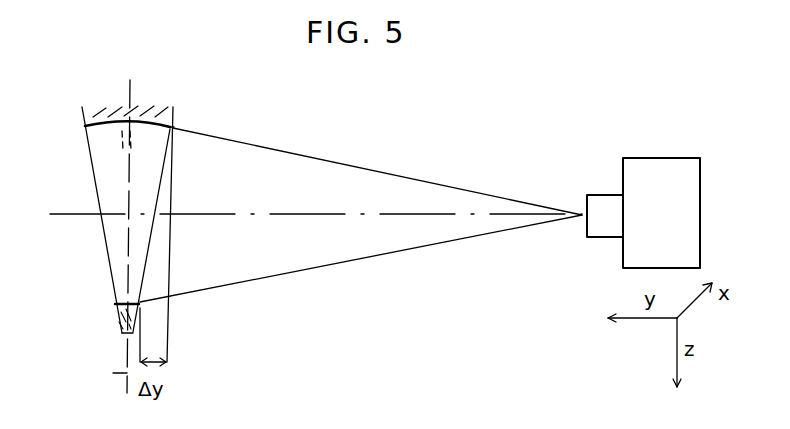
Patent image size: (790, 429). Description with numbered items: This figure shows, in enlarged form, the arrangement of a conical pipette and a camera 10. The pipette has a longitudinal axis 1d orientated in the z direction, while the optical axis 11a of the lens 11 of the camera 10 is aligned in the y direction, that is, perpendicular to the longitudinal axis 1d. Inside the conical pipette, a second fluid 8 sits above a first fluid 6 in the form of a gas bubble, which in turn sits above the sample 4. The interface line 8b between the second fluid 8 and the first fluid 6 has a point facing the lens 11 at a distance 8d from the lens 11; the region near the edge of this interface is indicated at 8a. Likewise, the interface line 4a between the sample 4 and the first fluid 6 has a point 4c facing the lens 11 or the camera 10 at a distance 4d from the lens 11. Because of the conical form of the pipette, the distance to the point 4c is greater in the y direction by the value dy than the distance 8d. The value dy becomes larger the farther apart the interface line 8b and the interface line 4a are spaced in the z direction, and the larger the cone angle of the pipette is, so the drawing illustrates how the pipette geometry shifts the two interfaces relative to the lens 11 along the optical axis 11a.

The second fluid 8 is at (85, 126).
The mirror edge 8a is at (175, 126).
The interface line 8b is at (117, 151).
The distance 8d is at (365, 168).
The first fluid 6 is at (97, 189).
The sample 4 is at (120, 324).
The interface line 4a is at (126, 296).
The point 4c is at (144, 308).
The distance 4d is at (380, 260).
The lens 11 is at (605, 204).
The optical axis 11a is at (327, 215).
The camera 10 is at (674, 150).
The longitudinal axis 1d is at (92, 377).